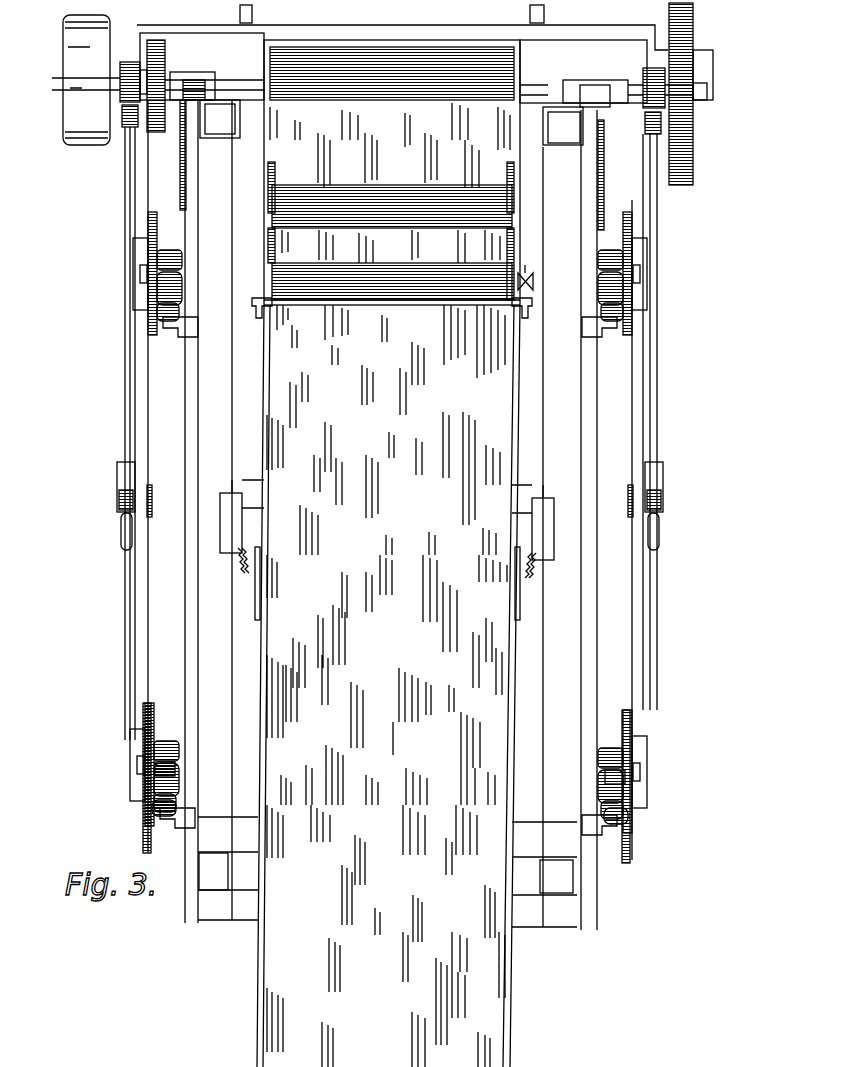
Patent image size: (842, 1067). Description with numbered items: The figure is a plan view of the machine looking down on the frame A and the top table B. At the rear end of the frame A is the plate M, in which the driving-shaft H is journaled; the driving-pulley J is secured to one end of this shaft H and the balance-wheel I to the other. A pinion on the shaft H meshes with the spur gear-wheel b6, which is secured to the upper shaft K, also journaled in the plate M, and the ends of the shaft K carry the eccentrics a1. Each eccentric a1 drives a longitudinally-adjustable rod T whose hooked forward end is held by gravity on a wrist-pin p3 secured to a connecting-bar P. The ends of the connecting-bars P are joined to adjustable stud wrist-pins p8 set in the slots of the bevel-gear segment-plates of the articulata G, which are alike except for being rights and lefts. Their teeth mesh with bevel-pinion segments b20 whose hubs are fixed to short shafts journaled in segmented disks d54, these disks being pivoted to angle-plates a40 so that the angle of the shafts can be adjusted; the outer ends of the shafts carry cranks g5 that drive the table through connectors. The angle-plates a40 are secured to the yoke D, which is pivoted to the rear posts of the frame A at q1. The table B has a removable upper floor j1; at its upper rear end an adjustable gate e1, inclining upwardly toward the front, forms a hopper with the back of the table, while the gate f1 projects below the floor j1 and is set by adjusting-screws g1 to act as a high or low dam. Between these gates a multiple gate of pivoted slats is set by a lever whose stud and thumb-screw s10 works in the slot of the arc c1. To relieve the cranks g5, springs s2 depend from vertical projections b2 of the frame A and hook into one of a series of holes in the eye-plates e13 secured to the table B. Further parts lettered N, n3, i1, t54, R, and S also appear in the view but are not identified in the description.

The frame top bar N is at (402, 64).
The lug n3 is at (252, 14).
The yoke D is at (186, 386).
The upper roller i1 is at (392, 172).
The gate f1 is at (412, 303).
The top table B is at (358, 640).
The upper floor j1 is at (409, 512).
The driving-shaft H is at (52, 82).
The driving-pulley J is at (86, 80).
The eccentrics a1 is at (128, 60).
The spur gear-wheel b6 is at (165, 52).
The upper shaft K is at (539, 90).
The balance-wheel I is at (687, 152).
The plate M is at (172, 127).
The pivot q1 is at (620, 142).
The adjusting-screws g1 is at (183, 120).
The adjustable rods T is at (126, 383).
The connecting-bars P is at (137, 603).
The segmented disks d54 is at (180, 190).
The angle-plates a40 is at (190, 205).
The rack t54 is at (177, 693).
The adjustable gate e1 is at (520, 207).
The stud and thumb-screw s10 is at (540, 277).
The arc c1 is at (527, 267).
The articulata G is at (148, 300).
The adjustable stud wrist-pins p8 is at (133, 247).
The bevel-pinion segments b20 is at (147, 770).
The cranks g5 is at (160, 812).
The wrist-pins p3 is at (117, 502).
The vertical projections b2 is at (233, 520).
The springs s2 is at (233, 555).
The eye-plates e13 is at (257, 597).
The roller bracket R is at (256, 338).
The frame A is at (383, 496).
The support S is at (382, 821).